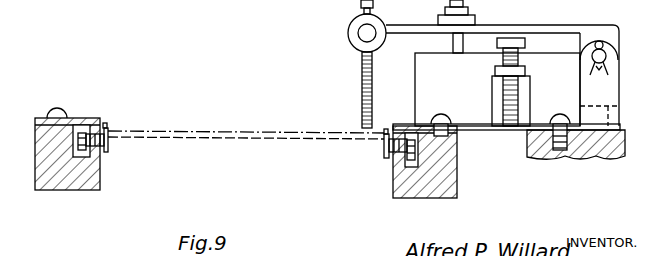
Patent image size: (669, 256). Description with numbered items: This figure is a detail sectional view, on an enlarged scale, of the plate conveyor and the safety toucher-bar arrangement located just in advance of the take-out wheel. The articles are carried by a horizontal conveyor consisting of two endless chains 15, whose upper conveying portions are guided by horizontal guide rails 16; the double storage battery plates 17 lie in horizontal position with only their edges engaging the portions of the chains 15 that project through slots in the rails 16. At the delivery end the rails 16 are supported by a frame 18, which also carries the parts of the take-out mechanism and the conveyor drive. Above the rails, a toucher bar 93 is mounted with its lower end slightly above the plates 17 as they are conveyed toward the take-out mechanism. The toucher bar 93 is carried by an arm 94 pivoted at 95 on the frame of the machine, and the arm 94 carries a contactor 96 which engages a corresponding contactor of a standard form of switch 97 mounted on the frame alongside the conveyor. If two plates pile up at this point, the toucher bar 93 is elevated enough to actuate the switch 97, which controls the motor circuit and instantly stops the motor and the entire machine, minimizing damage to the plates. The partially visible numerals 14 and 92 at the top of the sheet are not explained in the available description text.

The part (cut off at top of sheet) 14 is at (203, 3).
The part (cut off at top of sheet) 92 is at (323, 3).
The endless chains 15 is at (110, 144).
The horizontal guide rails 16 is at (100, 181).
The double storage battery plates 17 is at (229, 132).
The frame 18 is at (626, 151).
The toucher bar 93 is at (364, 86).
The arm 94 is at (527, 34).
The pivot 95 is at (606, 56).
The contactor 96 is at (459, 41).
The switch 97 is at (420, 63).